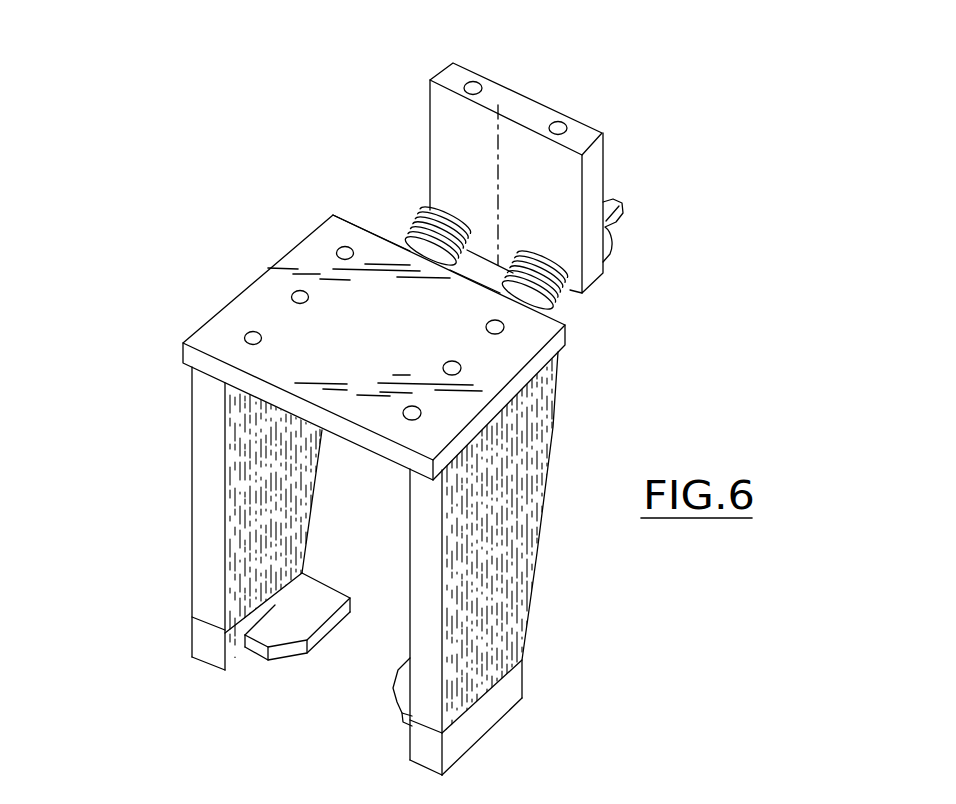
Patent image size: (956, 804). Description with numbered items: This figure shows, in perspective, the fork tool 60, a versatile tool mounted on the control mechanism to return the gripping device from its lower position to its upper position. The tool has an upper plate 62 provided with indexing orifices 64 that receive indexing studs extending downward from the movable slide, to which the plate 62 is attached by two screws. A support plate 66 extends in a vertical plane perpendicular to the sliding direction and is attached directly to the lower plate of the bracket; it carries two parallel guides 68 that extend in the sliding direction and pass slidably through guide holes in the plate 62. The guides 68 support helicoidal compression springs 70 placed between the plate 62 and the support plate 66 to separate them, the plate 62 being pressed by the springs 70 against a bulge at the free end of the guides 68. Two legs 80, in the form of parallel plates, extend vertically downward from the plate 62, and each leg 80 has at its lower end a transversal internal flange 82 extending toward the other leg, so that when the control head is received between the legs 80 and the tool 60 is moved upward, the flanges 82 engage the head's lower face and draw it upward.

The fork tool 60 is at (150, 407).
The upper plate 62 is at (258, 297).
The indexing orifices 64 is at (417, 413).
The support plate 66 is at (527, 98).
The guides 68 is at (396, 219).
The helicoidal compression springs 70 is at (425, 224).
The legs 80 is at (205, 514).
The transversal internal flange 82 is at (398, 670).